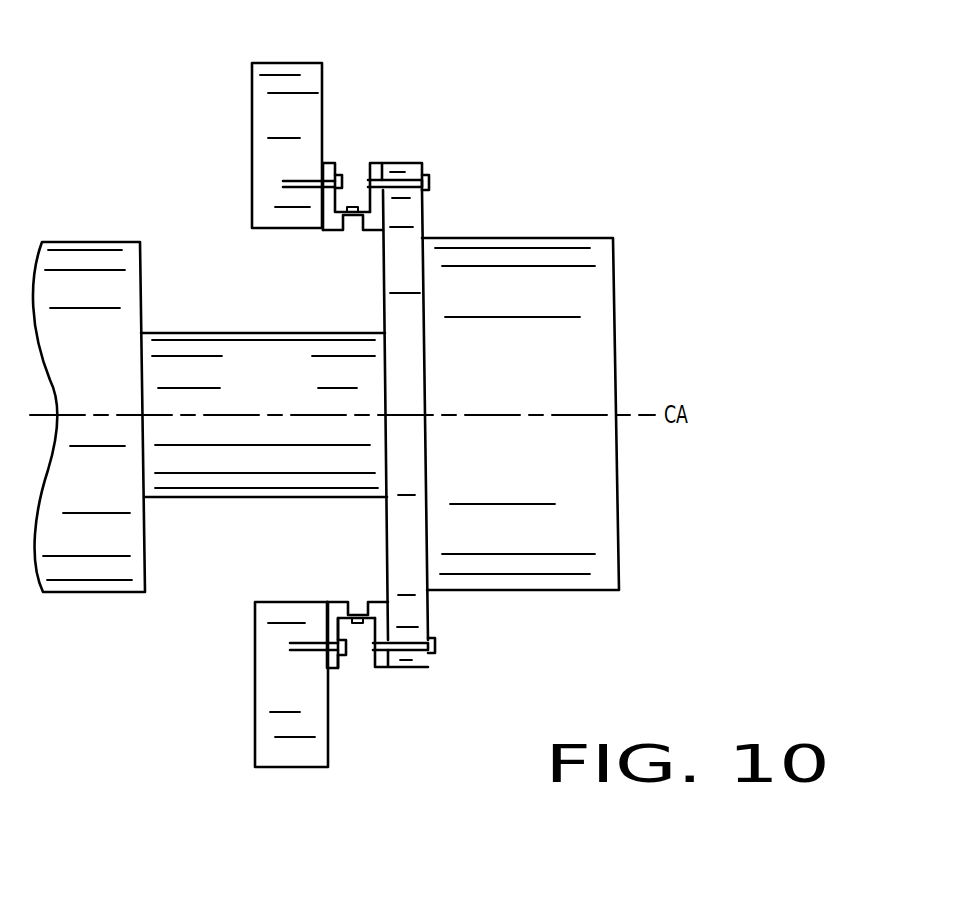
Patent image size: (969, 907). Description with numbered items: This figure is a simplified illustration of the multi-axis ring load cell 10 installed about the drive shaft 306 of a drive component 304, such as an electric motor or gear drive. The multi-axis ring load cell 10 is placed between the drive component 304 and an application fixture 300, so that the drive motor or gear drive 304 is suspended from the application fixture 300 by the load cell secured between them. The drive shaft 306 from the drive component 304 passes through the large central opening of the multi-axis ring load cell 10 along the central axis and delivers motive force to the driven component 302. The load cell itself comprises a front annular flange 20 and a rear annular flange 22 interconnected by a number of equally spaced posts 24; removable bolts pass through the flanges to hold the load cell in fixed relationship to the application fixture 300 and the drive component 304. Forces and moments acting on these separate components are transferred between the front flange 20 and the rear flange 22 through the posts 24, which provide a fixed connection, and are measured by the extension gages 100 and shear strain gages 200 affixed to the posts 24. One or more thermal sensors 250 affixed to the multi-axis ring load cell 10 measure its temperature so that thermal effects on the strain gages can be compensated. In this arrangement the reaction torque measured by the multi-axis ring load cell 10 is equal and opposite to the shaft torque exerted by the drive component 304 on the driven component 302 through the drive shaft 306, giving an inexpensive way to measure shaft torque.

The multi-axis ring load cell 10 is at (377, 418).
The front annular flange 20 is at (376, 162).
The rear annular flange 22 is at (328, 162).
The posts 24 is at (344, 231).
The extension gages 100 is at (357, 670).
The shear strain gages 200 is at (352, 205).
The thermal sensors 250 is at (357, 616).
The application fixture 300 is at (252, 193).
The driven component 302 is at (122, 366).
The drive component 304 is at (533, 390).
The drive shaft 306 is at (282, 407).